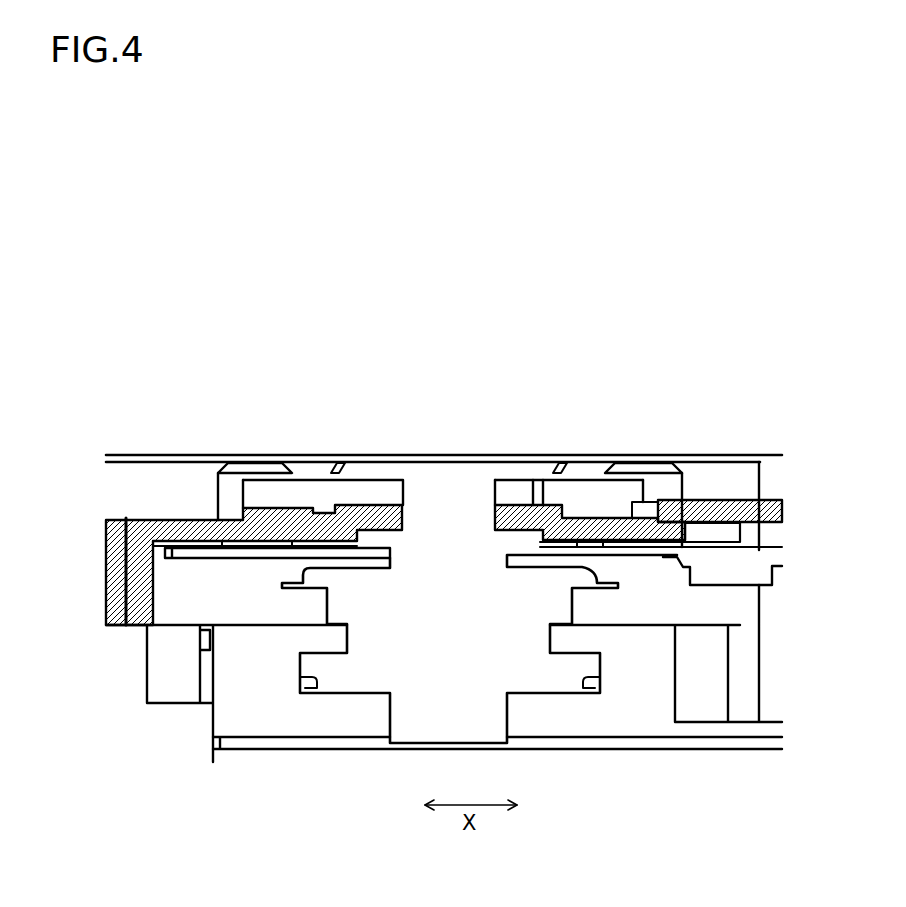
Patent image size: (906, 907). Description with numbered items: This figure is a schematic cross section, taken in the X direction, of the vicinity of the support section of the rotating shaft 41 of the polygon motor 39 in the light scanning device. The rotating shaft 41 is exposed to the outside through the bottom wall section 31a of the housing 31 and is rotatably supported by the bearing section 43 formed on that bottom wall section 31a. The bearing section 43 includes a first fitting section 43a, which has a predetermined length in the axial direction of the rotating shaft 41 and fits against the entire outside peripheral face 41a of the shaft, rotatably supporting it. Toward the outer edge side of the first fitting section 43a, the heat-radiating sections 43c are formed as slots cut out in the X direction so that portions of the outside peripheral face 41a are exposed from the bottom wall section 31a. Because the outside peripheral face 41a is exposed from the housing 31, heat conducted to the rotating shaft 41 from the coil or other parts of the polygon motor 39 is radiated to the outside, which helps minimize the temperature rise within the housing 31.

The housing 31 is at (118, 455).
The bottom wall section 31a is at (718, 502).
The polygon motor 39 is at (403, 628).
The rotating shaft 41 is at (435, 497).
The outside peripheral face 41a is at (402, 480).
The bearing section 43 is at (375, 474).
The first fitting section 43a is at (488, 512).
The heat-radiating sections 43c is at (355, 495).